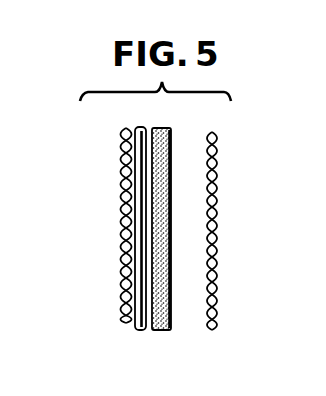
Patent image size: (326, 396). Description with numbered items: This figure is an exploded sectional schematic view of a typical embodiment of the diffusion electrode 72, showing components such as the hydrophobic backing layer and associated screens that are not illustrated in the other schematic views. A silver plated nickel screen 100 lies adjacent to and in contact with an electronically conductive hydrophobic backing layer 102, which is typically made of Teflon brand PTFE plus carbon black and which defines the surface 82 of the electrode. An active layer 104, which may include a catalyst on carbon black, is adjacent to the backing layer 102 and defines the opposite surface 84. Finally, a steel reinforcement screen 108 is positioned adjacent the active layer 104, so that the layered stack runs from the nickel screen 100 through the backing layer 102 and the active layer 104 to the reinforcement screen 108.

The diffusion electrode 72 is at (104, 181).
The surface 82 is at (134, 276).
The surface 84 is at (170, 316).
The silver plated nickel screen 100 is at (122, 222).
The electronically conductive hydrophobic backing layer 102 is at (139, 128).
The active layer 104 is at (172, 134).
The steel reinforcement screen 108 is at (217, 207).